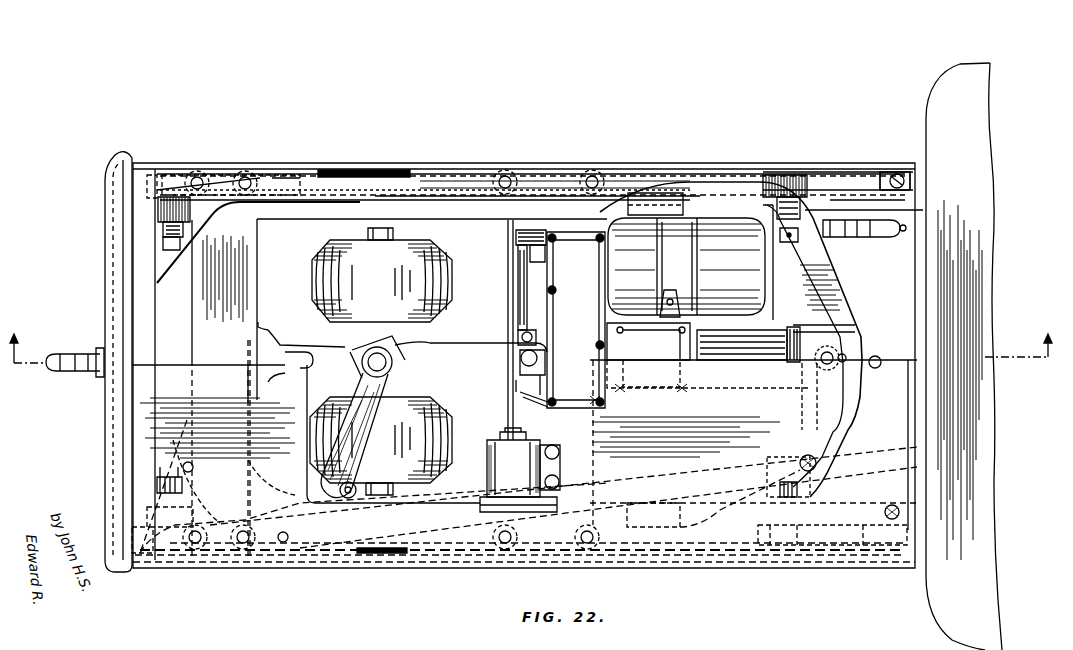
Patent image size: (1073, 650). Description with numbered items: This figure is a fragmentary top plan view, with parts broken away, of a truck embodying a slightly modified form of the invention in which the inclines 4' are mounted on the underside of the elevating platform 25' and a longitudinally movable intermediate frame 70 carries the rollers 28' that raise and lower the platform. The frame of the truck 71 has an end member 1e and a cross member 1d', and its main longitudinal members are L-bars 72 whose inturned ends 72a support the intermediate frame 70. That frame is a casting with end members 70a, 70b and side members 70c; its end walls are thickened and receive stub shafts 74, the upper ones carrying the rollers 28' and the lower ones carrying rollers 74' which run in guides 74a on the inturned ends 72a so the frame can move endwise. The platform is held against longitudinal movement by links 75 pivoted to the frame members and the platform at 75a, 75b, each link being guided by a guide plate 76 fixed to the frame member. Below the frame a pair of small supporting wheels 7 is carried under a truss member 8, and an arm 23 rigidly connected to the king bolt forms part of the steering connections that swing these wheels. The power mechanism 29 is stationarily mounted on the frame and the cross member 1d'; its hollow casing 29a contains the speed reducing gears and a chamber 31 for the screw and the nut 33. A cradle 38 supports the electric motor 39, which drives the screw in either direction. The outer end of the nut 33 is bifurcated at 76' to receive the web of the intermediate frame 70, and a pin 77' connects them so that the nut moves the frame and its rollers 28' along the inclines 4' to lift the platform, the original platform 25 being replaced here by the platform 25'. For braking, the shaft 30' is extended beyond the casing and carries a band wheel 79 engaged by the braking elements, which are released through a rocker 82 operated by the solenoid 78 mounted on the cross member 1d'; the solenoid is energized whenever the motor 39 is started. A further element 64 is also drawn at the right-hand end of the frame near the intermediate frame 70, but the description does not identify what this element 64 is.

The end member 1e is at (106, 284).
The platform 25 is at (531, 348).
The end member of intermediate frame 70b is at (192, 286).
The rollers 74' is at (520, 367).
The rollers 28' is at (445, 369).
The stub shafts 74 is at (478, 362).
The L-bars 72 is at (300, 170).
The inturned ends 72a is at (300, 219).
The guides 74a is at (272, 178).
The pivot of link to frame member 75a is at (330, 164).
The guide plate 76 is at (388, 372).
The frame of the truck 71 is at (475, 164).
The inclines 4' is at (490, 385).
The power mechanism 29 is at (372, 147).
The supporting wheels 7 is at (430, 253).
The truss member 8 is at (318, 350).
The arm 23 is at (348, 390).
The cross member 1d' is at (491, 330).
The shaft 30' is at (506, 254).
The band wheel 79 is at (516, 283).
The rocker 82 is at (520, 316).
The hollow casing 29a is at (560, 406).
The solenoid 78 is at (487, 469).
The electric motor 39 is at (677, 311).
The cradle 38 is at (677, 267).
The side members of intermediate frame 70c is at (648, 190).
The links 75 is at (600, 172).
The pivot of link to platform 75b is at (882, 174).
The solenoid 64 is at (894, 237).
The intermediate frame 70 is at (845, 284).
The end member of intermediate frame 70a is at (848, 318).
The nut 33 is at (810, 324).
The bifurcations 76' is at (851, 346).
The pin 77' is at (878, 339).
The chamber 31 is at (742, 355).
The elevating platform 25' is at (528, 486).